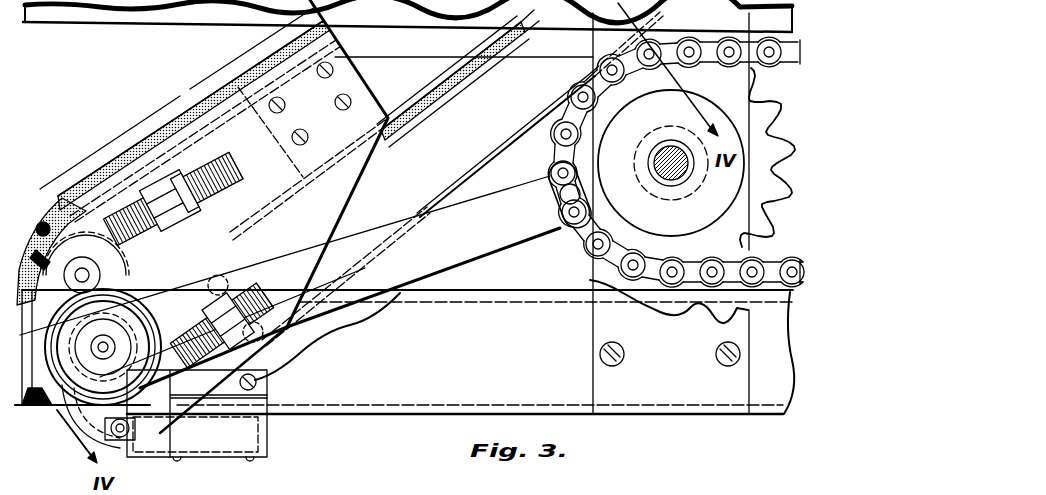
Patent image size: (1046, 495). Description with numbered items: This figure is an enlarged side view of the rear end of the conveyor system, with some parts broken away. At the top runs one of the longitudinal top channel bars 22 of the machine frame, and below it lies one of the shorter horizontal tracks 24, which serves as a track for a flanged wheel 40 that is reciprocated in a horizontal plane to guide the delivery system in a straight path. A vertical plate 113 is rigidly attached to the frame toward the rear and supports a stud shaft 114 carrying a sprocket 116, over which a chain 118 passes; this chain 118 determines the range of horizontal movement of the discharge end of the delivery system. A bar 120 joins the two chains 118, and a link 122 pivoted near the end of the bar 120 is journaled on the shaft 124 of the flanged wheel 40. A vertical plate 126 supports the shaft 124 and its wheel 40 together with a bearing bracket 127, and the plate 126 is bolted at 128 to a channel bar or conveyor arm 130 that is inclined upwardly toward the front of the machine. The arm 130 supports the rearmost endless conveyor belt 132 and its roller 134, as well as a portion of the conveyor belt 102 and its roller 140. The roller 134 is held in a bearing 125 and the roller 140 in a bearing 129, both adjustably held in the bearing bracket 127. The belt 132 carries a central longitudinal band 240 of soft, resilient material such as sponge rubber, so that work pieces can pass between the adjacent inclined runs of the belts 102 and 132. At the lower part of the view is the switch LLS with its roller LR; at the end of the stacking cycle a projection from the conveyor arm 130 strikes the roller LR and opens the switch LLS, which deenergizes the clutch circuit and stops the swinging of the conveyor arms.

The longitudinal or top channel bar 22 is at (92, 14).
The horizontal track 24 is at (358, 398).
The flanged wheel 40 is at (67, 394).
The conveyor belt 102 is at (485, 63).
The vertical plate 113 is at (738, 395).
The stud shaft 114 is at (663, 175).
The sprocket 116 is at (747, 85).
The chain 118 is at (747, 230).
The bar 120 is at (558, 213).
The link 122 is at (500, 245).
The shaft 124 is at (150, 338).
The bearing 125 is at (81, 255).
The vertical plate 126 is at (353, 183).
The bearing bracket 127 is at (227, 205).
The bolts 128 is at (302, 130).
The bearing 129 is at (103, 452).
The channel bar or conveyor arm 130 is at (433, 100).
The rearmost endless conveyor belt 132 is at (96, 201).
The roller 134 is at (24, 290).
The roller 140 is at (97, 428).
The band of soft resilient material 240 is at (99, 193).
The roller LR is at (118, 440).
The switch LLS is at (213, 448).